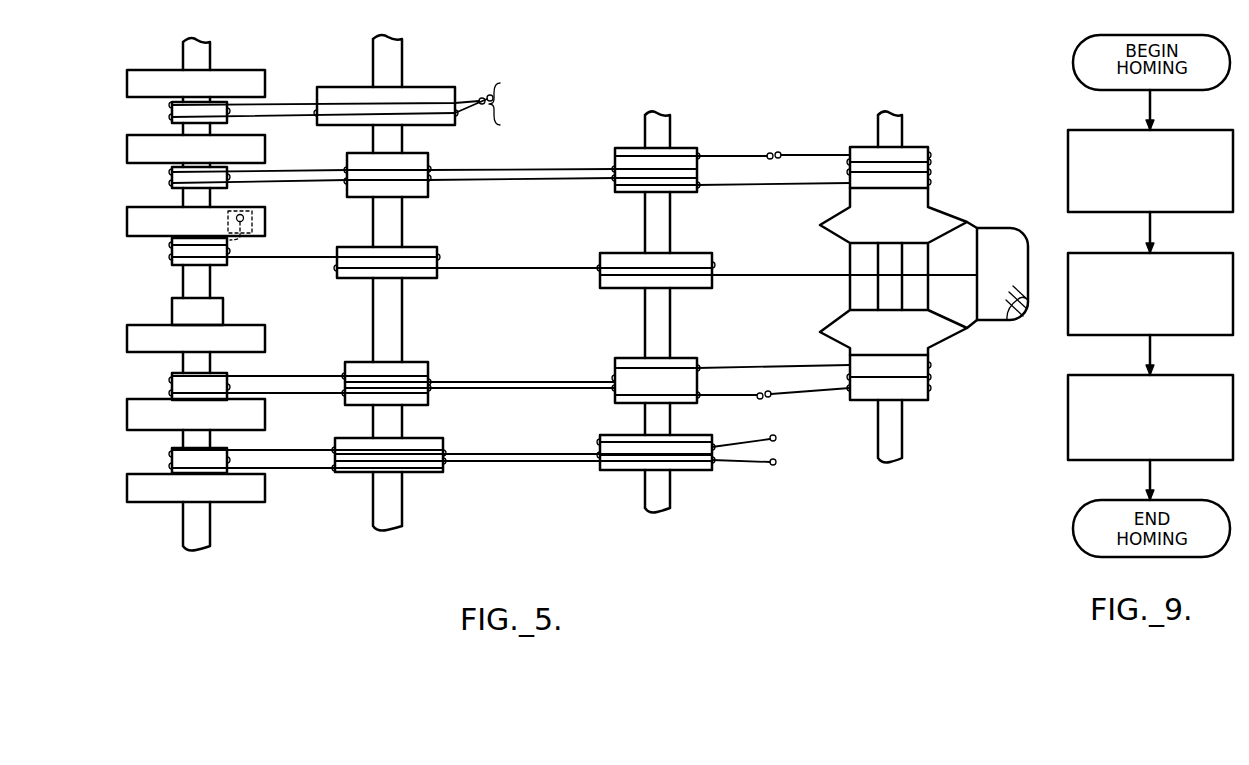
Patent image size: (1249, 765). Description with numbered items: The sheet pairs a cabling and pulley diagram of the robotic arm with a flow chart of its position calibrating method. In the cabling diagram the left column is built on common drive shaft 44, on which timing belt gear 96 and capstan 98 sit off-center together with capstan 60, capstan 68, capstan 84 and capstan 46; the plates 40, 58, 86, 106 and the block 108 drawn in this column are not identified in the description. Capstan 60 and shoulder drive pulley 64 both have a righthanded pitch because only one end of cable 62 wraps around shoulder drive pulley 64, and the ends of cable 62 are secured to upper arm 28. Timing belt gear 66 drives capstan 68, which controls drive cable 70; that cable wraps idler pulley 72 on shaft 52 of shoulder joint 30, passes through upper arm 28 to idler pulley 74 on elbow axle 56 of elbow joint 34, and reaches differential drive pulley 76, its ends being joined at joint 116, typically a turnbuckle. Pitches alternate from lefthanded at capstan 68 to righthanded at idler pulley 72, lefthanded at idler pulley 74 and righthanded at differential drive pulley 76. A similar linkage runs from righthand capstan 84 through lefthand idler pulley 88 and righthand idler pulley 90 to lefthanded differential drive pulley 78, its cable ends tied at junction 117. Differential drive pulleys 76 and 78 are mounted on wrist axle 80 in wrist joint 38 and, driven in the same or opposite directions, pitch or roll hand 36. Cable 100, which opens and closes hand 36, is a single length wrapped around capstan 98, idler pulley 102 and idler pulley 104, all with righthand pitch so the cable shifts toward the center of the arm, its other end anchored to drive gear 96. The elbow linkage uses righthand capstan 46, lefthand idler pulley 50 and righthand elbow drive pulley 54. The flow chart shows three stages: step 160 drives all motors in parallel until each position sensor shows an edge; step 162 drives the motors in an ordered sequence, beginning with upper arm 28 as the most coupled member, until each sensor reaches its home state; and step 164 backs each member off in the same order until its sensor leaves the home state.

In FIG. 5, the upper arm 28 is at (524, 104).
In FIG. 5, the shoulder joint 30 is at (513, 305).
In FIG. 5, the elbow joint 34 is at (749, 333).
In FIG. 5, the hand 36 is at (985, 240).
In FIG. 5, the wrist joint 38 is at (924, 309).
In FIG. 5, the base plate 40 is at (210, 499).
In FIG. 5, the common drive shaft 44 is at (204, 526).
In FIG. 5, the capstan 46 is at (172, 450).
In FIG. 5, the idler pulley 50 is at (418, 438).
In FIG. 5, the shaft 52 is at (402, 502).
In FIG. 5, the elbow drive pulley 54 is at (690, 435).
In FIG. 5, the elbow axle 56 is at (668, 496).
In FIG. 5, the top plate 58 is at (210, 94).
In FIG. 5, the capstan 60 is at (172, 123).
In FIG. 5, the cable 62 is at (271, 119).
In FIG. 5, the shoulder drive pulley 64 is at (430, 87).
In FIG. 5, the timing belt gear 66 is at (210, 160).
In FIG. 5, the capstan 68 is at (175, 187).
In FIG. 5, the drive cable 70 is at (754, 188).
In FIG. 5, the idler pulley 72 is at (415, 197).
In FIG. 5, the idler pulley 74 is at (676, 148).
In FIG. 5, the differential drive pulley 76 is at (910, 147).
In FIG. 5, the differential drive pulley 78 is at (922, 401).
In FIG. 5, the wrist axle 80 is at (900, 446).
In FIG. 5, the capstan 84 is at (172, 375).
In FIG. 5, the plate 86 is at (210, 427).
In FIG. 5, the idler pulley 88 is at (412, 362).
In FIG. 5, the idler pulley 90 is at (684, 358).
In FIG. 5, the timing belt gear 96 is at (204, 232).
In FIG. 5, the capstan 98 is at (172, 263).
In FIG. 5, the cable 100 is at (774, 277).
In FIG. 5, the idler pulley 102 is at (428, 278).
In FIG. 5, the idler pulley 104 is at (689, 253).
In FIG. 5, the plate 106 is at (178, 350).
In FIG. 5, the left block 108 is at (172, 300).
In FIG. 5, the joint 116 is at (779, 153).
In FIG. 5, the junction 117 is at (770, 393).
In FIG. 9, the step 160 is at (1186, 130).
In FIG. 9, the step 162 is at (1185, 253).
In FIG. 9, the step 164 is at (1185, 375).